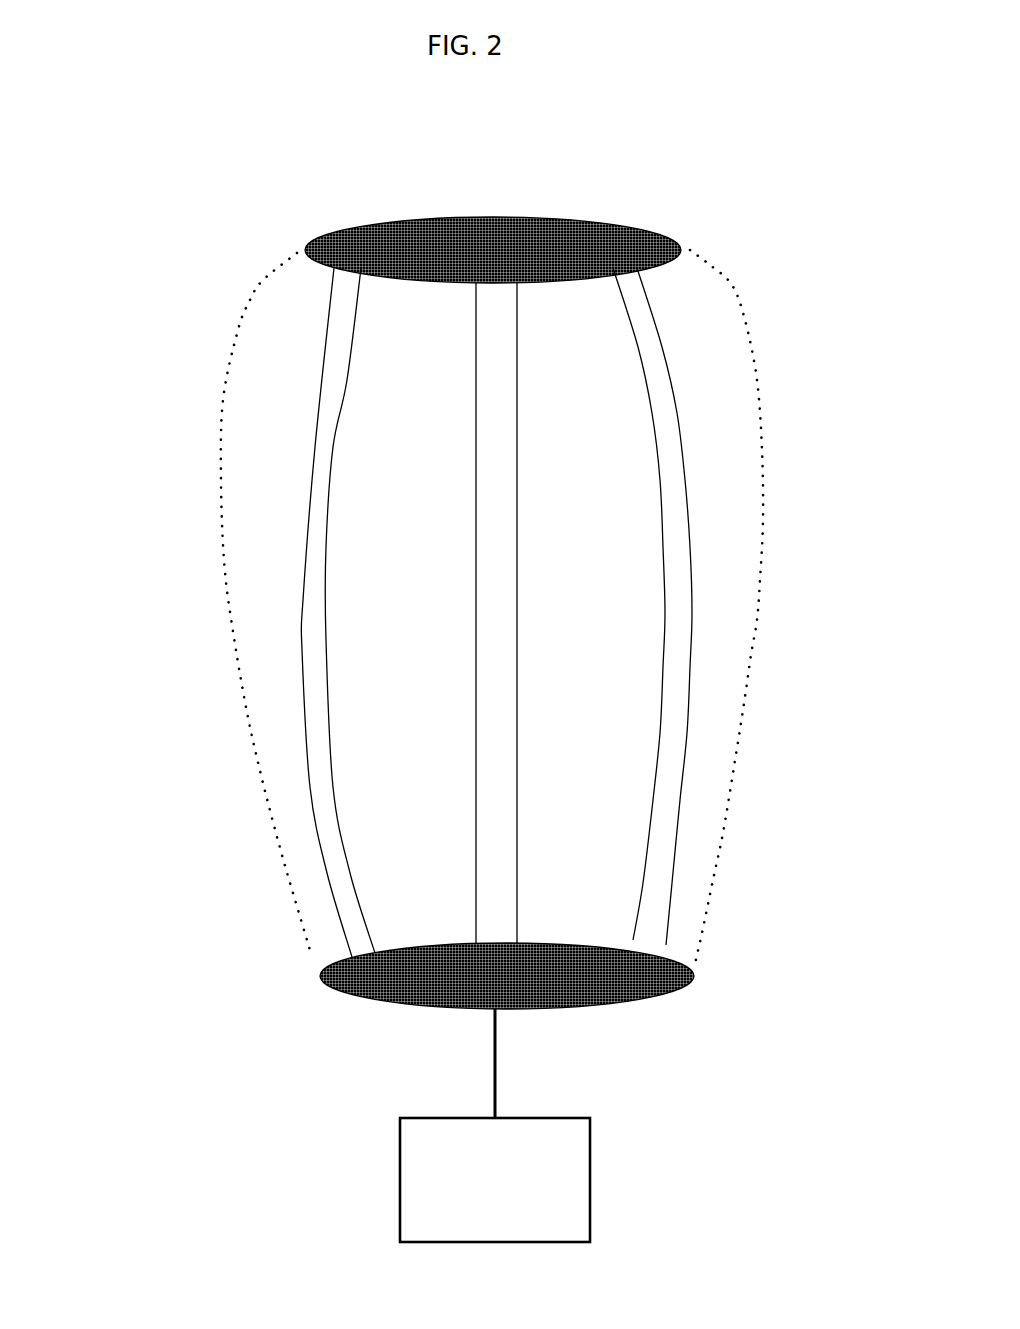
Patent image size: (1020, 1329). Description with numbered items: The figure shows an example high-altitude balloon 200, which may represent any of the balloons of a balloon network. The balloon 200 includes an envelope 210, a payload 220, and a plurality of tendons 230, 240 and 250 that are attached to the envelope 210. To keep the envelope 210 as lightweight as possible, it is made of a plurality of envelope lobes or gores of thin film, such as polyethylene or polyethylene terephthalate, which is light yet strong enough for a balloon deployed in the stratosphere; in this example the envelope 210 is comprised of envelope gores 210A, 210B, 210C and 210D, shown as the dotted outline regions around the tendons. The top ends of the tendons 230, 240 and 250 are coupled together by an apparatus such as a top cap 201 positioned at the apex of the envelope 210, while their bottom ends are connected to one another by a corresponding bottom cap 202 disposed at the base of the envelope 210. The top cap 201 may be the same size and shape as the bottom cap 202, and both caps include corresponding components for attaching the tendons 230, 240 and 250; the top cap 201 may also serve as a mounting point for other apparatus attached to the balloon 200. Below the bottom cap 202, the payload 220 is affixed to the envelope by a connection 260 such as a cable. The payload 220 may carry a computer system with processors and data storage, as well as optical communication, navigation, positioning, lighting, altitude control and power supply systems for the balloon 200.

The high-altitude balloon 200 is at (866, 59).
The top cap 201 is at (655, 228).
The bottom cap 202 is at (442, 997).
The envelope 210 is at (760, 423).
The envelope gore 210A is at (253, 663).
The envelope gore 210B is at (385, 748).
The envelope gore 210C is at (625, 768).
The envelope gore 210D is at (734, 603).
The payload 220 is at (400, 1172).
The tendon 230 is at (345, 268).
The tendon 240 is at (492, 283).
The tendon 250 is at (627, 272).
The connection 260 is at (498, 1077).